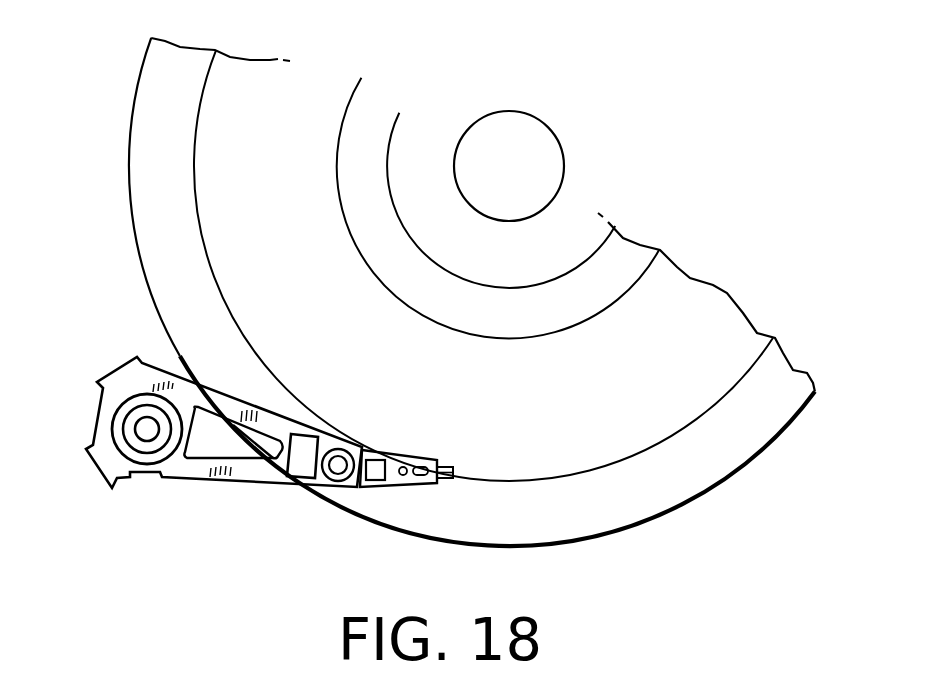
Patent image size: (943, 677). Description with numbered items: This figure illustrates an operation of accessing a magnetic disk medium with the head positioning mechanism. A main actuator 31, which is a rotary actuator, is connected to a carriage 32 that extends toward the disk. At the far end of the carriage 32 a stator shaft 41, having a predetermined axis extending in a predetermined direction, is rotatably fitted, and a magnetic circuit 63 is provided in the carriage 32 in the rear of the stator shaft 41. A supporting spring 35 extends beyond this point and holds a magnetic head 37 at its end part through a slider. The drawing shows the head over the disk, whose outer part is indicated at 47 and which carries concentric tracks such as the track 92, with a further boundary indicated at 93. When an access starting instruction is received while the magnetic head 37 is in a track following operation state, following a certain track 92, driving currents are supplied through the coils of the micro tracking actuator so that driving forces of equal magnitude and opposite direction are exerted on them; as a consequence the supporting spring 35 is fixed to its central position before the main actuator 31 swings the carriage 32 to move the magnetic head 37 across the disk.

The main actuator 31 is at (147, 432).
The carriage 32 is at (233, 477).
The supporting spring 35 is at (389, 486).
The magnetic head 37 is at (445, 463).
The stator shaft 41 is at (338, 467).
The magnetic disk 47 is at (693, 498).
The magnetic circuit 63 is at (302, 468).
The track 92 is at (775, 339).
The inner recording zone boundary 93 is at (662, 254).